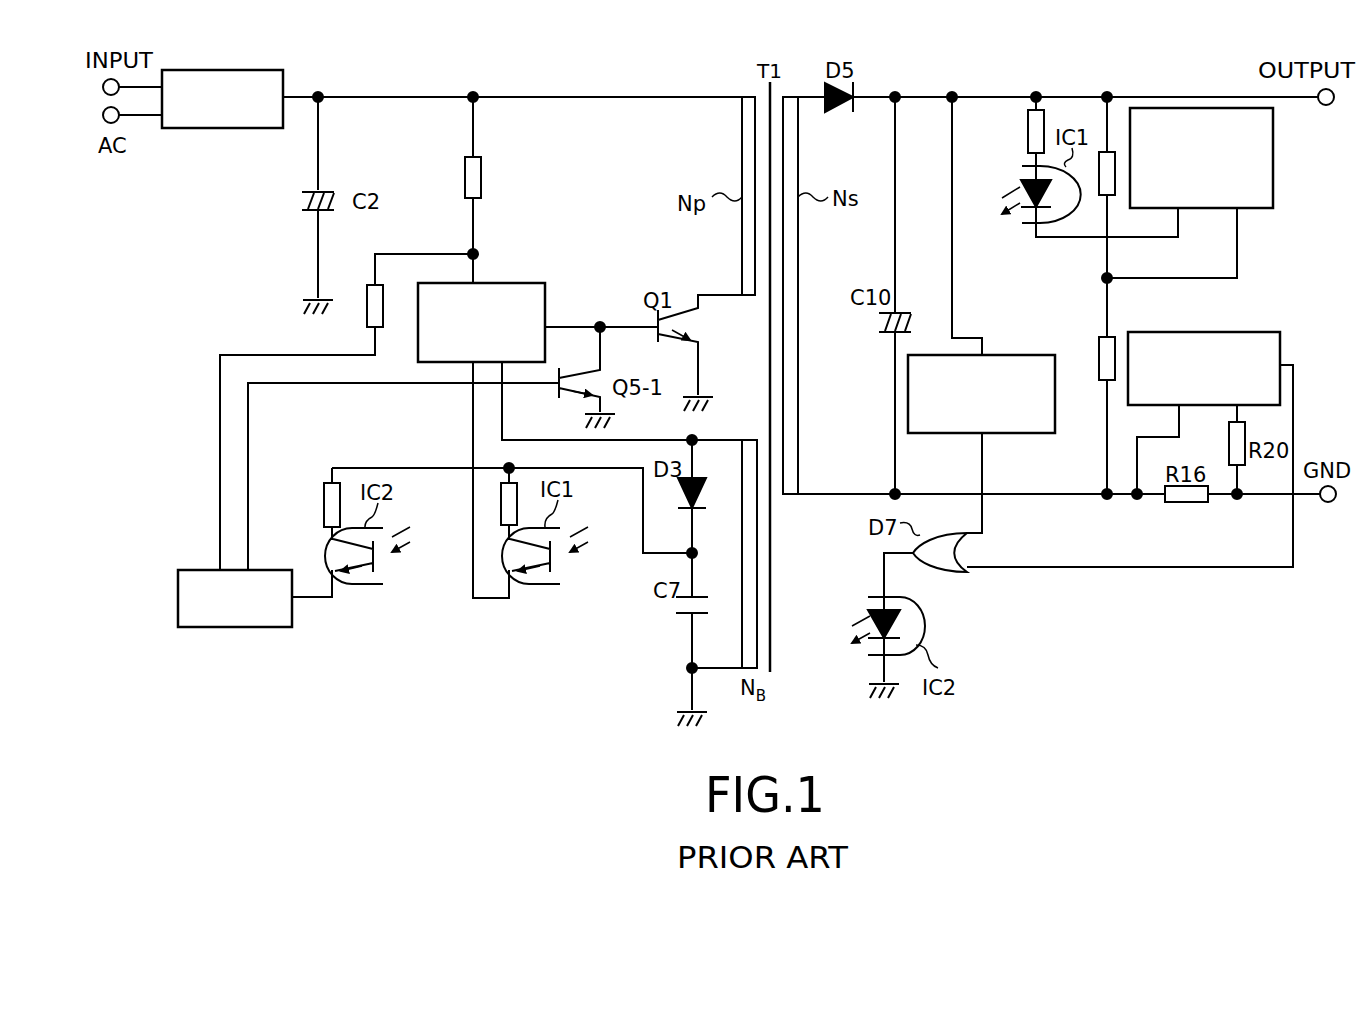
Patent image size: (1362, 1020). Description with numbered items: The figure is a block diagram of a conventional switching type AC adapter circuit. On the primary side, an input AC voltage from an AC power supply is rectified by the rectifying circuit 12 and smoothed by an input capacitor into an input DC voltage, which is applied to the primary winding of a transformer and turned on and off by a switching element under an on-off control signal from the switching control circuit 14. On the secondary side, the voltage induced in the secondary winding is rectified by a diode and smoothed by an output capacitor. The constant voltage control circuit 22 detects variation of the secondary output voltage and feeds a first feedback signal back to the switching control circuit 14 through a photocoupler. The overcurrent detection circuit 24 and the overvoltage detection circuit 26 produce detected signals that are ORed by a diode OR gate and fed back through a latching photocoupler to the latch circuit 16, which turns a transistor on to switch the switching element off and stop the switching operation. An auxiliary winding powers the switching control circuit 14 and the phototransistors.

The rectifying circuit 12 is at (218, 70).
The switching control circuit 14 is at (513, 283).
The latch circuit 16 is at (237, 630).
The constant voltage control circuit 22 is at (1276, 179).
The overcurrent detection circuit 24 is at (1261, 328).
The overvoltage detection circuit 26 is at (1028, 435).